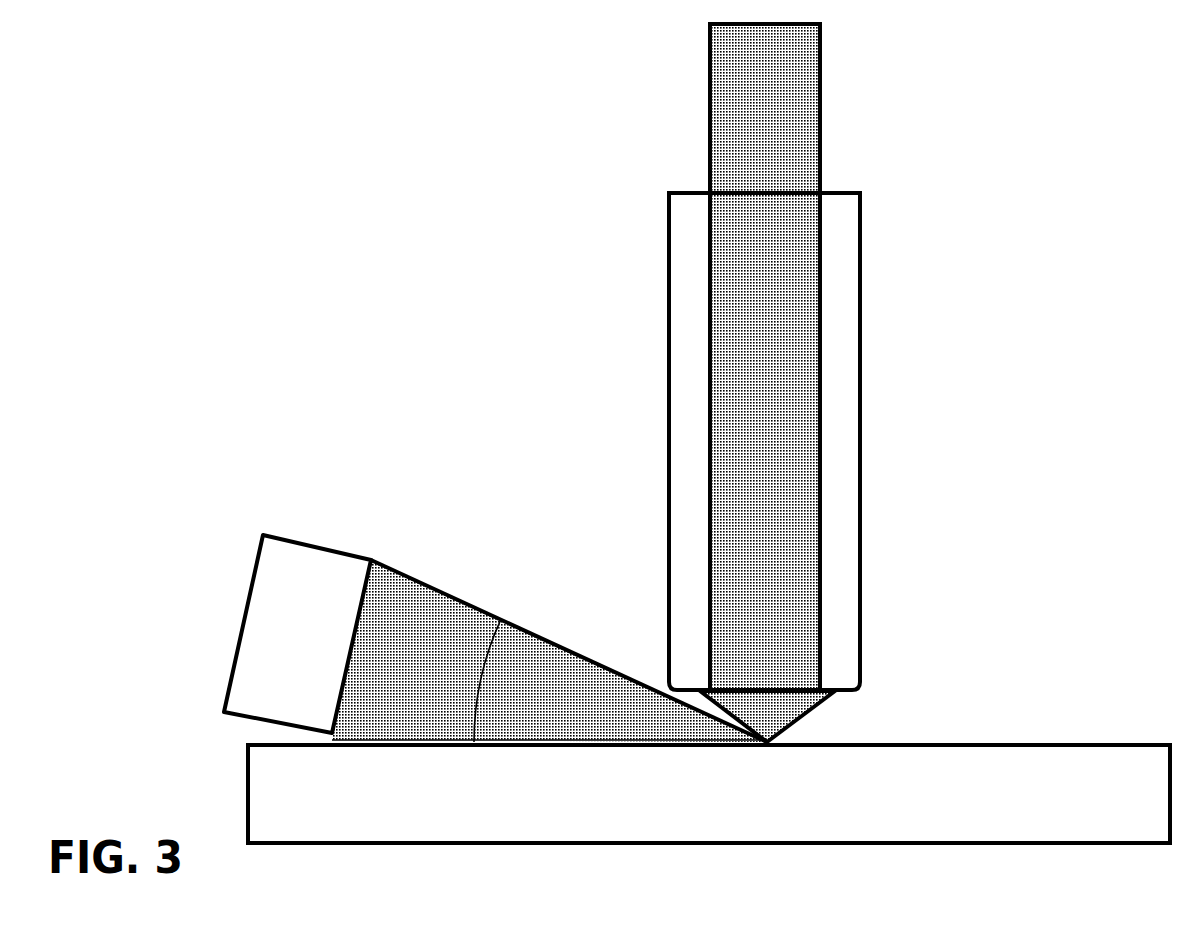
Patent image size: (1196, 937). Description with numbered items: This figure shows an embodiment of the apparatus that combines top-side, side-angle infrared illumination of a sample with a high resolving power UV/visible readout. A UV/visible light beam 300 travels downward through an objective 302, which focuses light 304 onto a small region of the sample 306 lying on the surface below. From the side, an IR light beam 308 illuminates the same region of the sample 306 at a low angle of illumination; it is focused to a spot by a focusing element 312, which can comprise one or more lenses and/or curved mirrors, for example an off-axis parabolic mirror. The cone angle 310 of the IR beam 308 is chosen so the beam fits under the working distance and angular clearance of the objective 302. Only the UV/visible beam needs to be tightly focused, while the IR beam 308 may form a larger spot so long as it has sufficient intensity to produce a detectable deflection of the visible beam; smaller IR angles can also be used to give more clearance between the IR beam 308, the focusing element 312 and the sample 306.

The UV/visible light beam 300 is at (744, 357).
The objective 302 is at (744, 441).
The focused light 304 is at (774, 716).
The sample 306 is at (709, 794).
The IR light beam 308 is at (549, 651).
The cone angle 310 is at (503, 670).
The focusing element 312 is at (297, 634).